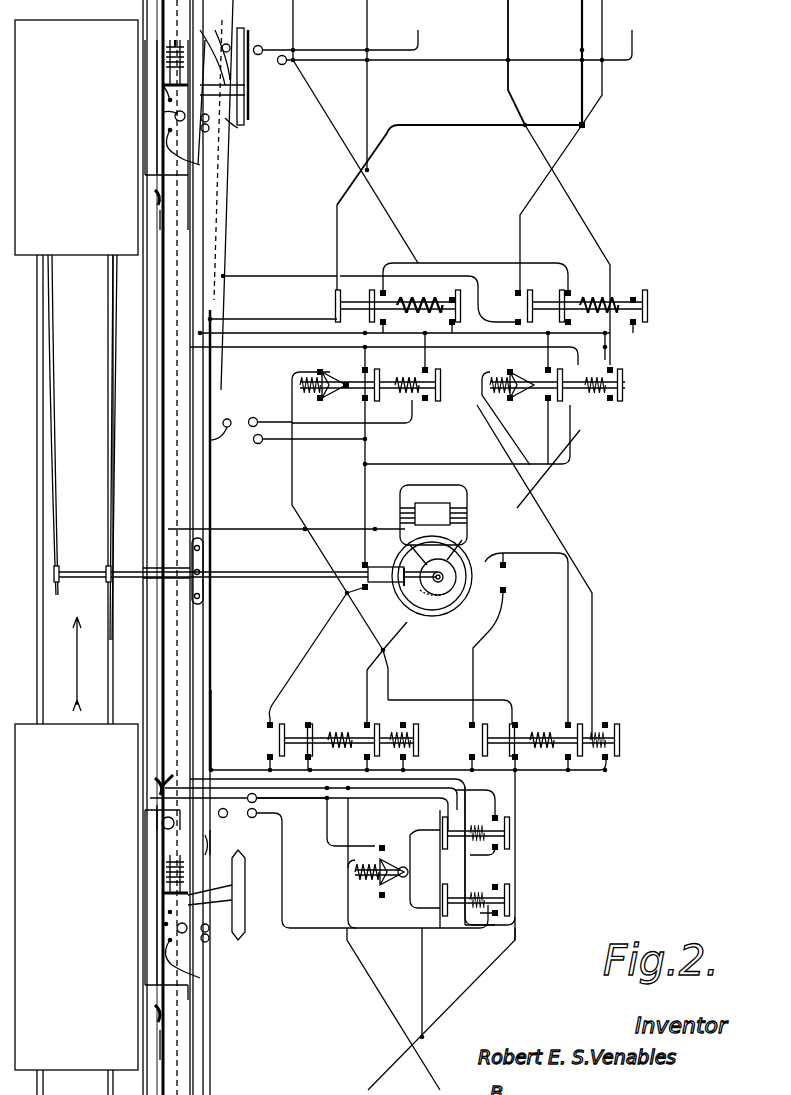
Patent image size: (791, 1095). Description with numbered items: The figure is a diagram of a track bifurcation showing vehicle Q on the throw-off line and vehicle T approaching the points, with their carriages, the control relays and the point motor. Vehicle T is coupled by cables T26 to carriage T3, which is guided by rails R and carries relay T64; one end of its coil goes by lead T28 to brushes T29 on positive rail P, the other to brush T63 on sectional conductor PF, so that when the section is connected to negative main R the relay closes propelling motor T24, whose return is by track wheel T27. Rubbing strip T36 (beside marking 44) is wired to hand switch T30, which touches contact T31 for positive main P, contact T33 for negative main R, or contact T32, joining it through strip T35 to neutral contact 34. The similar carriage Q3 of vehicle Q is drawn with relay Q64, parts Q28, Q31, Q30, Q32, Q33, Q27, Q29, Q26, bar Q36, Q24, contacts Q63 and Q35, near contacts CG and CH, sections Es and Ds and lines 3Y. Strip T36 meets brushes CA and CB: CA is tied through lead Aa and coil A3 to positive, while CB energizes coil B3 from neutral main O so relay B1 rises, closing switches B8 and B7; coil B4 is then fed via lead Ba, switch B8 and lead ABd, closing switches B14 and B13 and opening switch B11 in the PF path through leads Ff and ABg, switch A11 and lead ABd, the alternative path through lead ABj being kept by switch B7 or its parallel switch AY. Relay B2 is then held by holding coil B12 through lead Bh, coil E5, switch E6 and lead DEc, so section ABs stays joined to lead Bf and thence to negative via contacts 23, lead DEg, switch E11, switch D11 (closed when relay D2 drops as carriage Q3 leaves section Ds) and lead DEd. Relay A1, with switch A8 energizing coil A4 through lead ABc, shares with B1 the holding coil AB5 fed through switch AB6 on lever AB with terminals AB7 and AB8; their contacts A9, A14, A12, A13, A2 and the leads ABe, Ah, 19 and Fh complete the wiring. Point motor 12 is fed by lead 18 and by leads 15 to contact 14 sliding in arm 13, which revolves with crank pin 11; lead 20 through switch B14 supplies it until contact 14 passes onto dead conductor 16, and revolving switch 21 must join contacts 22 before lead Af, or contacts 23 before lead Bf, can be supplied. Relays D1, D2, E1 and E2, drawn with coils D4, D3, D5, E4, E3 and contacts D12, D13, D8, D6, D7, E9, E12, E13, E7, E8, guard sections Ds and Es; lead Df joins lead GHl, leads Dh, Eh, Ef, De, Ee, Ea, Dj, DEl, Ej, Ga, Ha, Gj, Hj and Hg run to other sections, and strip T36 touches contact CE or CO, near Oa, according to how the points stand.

The vehicle Q is at (15, 135).
The vehicle T is at (15, 852).
The track wires 3Y is at (108, 487).
The carriage Q3 is at (148, 67).
The coil Q64 is at (165, 47).
The terminal Q28 is at (168, 52).
The armature Q31 is at (163, 85).
The pivot Q30 is at (168, 101).
The link Q32 is at (175, 116).
The pivot Q33 is at (168, 130).
The lever Q27 is at (190, 165).
The catch Q29 is at (155, 197).
The member Q26 is at (158, 217).
The contact bar Q36 is at (246, 110).
The contact Q24 is at (231, 40).
The contacts Q63 is at (218, 129).
The contact Q35 is at (247, 131).
The terminal CG is at (260, 62).
The terminal CH is at (280, 71).
The wire Ga is at (310, 50).
The wire Ha is at (414, 62).
The wire Gj is at (366, 84).
The wire Hj is at (581, 104).
The wire Hg is at (602, 82).
The lead GHl is at (458, 126).
The wire Dh is at (341, 140).
The wire Eh is at (586, 207).
The wire Ef is at (521, 237).
The lead Df is at (336, 232).
The lead DEg is at (440, 264).
The wire De is at (290, 290).
The wire Ee is at (478, 290).
The switch D11 is at (372, 302).
The coil D4 is at (420, 298).
The relay D2 is at (461, 305).
The terminal D12 is at (414, 311).
The terminal D13 is at (465, 326).
The switch E11 is at (550, 306).
The terminal E9 is at (513, 307).
The coil E4 is at (599, 299).
The relay E2 is at (648, 305).
The terminal E12 is at (624, 315).
The terminal E13 is at (640, 318).
The lead DEd is at (232, 319).
The lead DEc is at (232, 349).
The coil D5 is at (310, 394).
The armature D8 is at (375, 375).
The contact D6 is at (350, 399).
The coil D3 is at (369, 386).
The contact D7 is at (374, 392).
The relay D1 is at (441, 380).
The coil E5 is at (553, 418).
The switch E6 is at (519, 389).
The contact E7 is at (555, 398).
The coil E3 is at (595, 374).
The relay E1 is at (623, 380).
The terminal E8 is at (614, 400).
The neutral contact 34 is at (220, 621).
The terminal Oa is at (271, 416).
The contact CO is at (237, 439).
The contact CE is at (307, 450).
The wire Ea is at (314, 443).
The wire Dj is at (367, 452).
The wire DEl is at (466, 470).
The wire Ej is at (548, 455).
The lead Bh is at (580, 580).
The lead 18 is at (232, 530).
The revolving switch 21 is at (366, 570).
The contacts 22 is at (362, 562).
The motor 12 is at (433, 519).
The crank pin 11 is at (432, 576).
The leads 15 is at (429, 601).
The arm 13 is at (395, 590).
The contact 14 is at (400, 560).
The conductor 16 is at (395, 636).
The lead 20 is at (530, 560).
The switch contacts 23 is at (501, 573).
The lead Bf is at (474, 655).
The wire Ah is at (375, 640).
The lead Af is at (306, 655).
The wire 19 is at (366, 672).
The lead ABg is at (418, 700).
The section ABs is at (212, 683).
The negative main R is at (172, 620).
The neutral main O is at (162, 637).
The positive main P is at (155, 660).
The lead ABd is at (225, 769).
The wire ABe is at (250, 752).
The terminal A9 is at (268, 720).
The switch A11 is at (308, 728).
The coil A4 is at (338, 732).
The terminal A14 is at (365, 722).
The contact A12 is at (391, 734).
The coil A13 is at (410, 739).
The contact A2 is at (419, 741).
The switch B7 is at (470, 725).
The switch B11 is at (550, 741).
The coil B4 is at (541, 732).
The switch B14 is at (566, 722).
The holding coil B12 is at (595, 737).
The switch B13 is at (608, 728).
The relay B2 is at (620, 741).
The relay B1 is at (510, 832).
The switch B8 is at (483, 822).
The coil B3 is at (474, 860).
The relay A1 is at (510, 899).
The relay coil A3 is at (483, 882).
The switch A8 is at (496, 930).
The switch AY is at (440, 930).
The terminal AB7 is at (378, 845).
The holding coil AB5 is at (352, 873).
The armature AB8 is at (380, 897).
The lever AB is at (413, 868).
The switch AB6 is at (396, 893).
The brush contact CB is at (248, 798).
The brush contact CA is at (354, 869).
The lead Ba is at (300, 800).
The lead ABc is at (310, 805).
The lead Aa is at (312, 930).
The lead ABj is at (423, 984).
The wire Fh is at (394, 1019).
The lead Ff is at (394, 1062).
The brushes T29 is at (158, 782).
The propelling motor T24 is at (162, 823).
The cables T26 is at (150, 835).
The carriage T3 is at (148, 887).
The relay T64 is at (166, 870).
The lead T28 is at (163, 902).
The contact T31 is at (168, 913).
The switch T30 is at (166, 926).
The contact T32 is at (160, 935).
The contact T33 is at (168, 942).
The track wheel T27 is at (209, 911).
The brush T63 is at (216, 939).
The rubbing strip contact T36 is at (247, 877).
The link 44 is at (245, 895).
The strip T35 is at (245, 932).
The sectional conductor PF is at (211, 1062).
The section Es is at (226, 208).
The section Ds is at (222, 160).